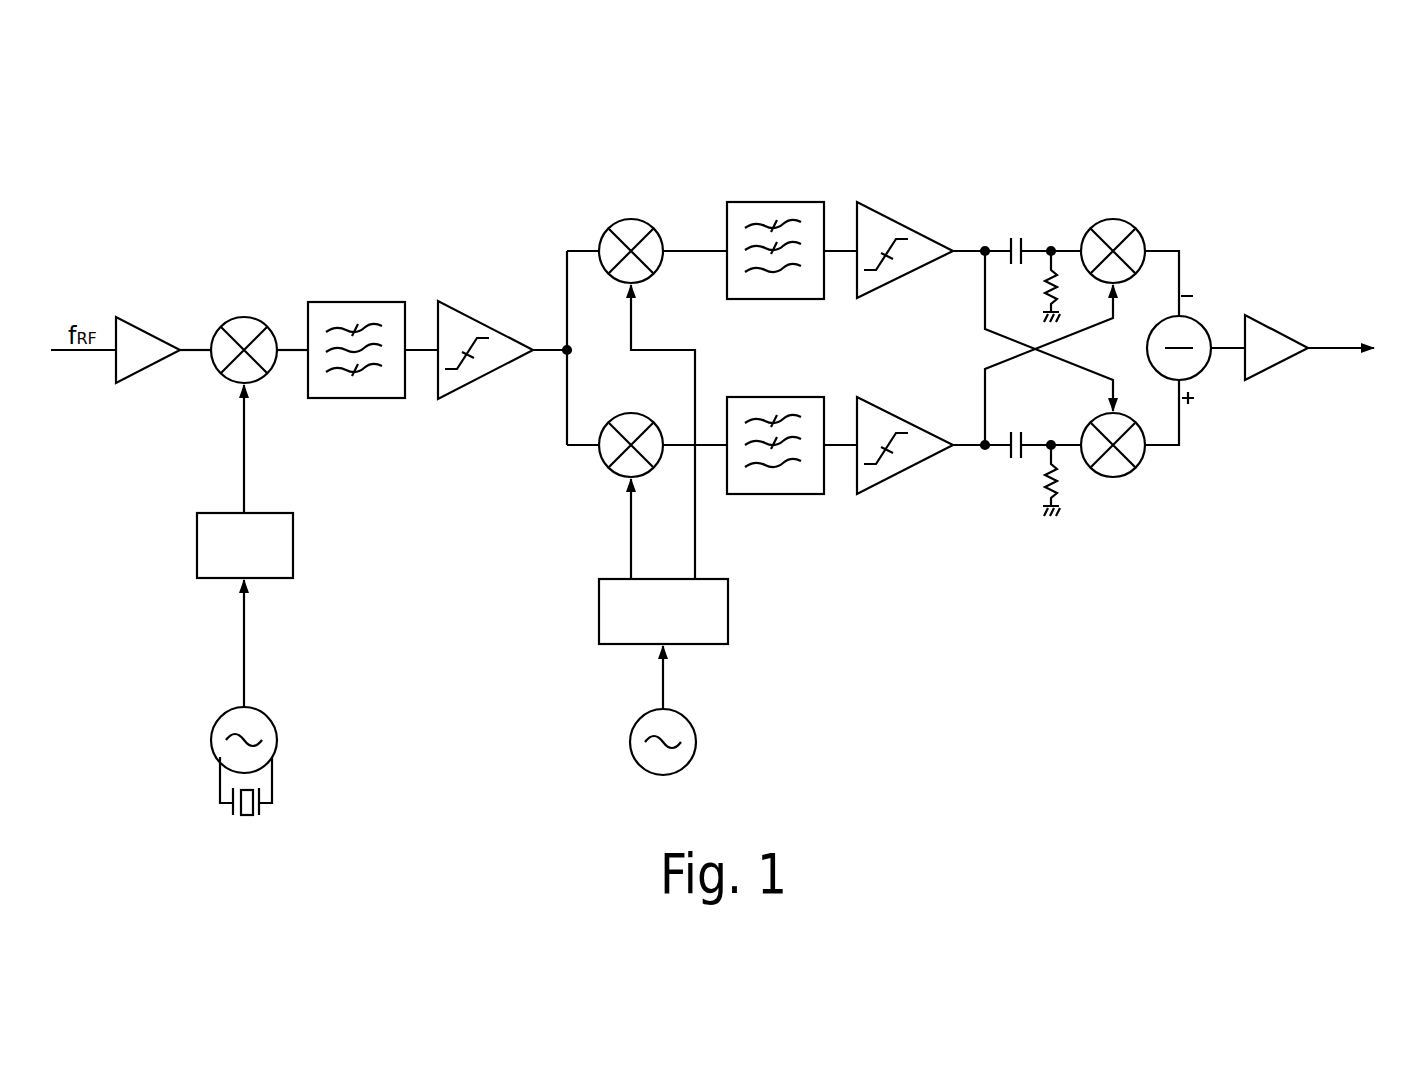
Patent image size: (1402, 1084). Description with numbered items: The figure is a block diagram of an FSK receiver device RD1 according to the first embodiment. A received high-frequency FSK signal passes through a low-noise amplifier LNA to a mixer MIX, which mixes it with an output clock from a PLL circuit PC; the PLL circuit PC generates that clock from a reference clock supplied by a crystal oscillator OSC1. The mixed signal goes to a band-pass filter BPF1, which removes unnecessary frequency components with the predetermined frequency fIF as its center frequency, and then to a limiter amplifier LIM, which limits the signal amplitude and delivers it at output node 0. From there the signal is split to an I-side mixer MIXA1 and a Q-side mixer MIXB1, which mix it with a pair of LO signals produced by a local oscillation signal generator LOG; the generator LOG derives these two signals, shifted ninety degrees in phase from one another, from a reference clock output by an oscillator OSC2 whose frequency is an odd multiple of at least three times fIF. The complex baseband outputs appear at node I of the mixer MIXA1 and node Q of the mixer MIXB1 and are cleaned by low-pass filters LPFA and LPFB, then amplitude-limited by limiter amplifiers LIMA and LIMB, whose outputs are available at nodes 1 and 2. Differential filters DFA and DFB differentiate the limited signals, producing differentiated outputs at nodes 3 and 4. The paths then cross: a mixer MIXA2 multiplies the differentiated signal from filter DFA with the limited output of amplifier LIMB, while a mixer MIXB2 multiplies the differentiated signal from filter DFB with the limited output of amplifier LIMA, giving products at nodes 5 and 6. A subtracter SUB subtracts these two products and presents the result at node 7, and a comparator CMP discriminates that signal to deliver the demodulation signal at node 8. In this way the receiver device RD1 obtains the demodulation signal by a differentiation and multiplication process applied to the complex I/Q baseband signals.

The FSK receiver device RD1 is at (345, 187).
The low-noise amplifier LNA is at (163, 338).
The mixer MIX is at (259, 337).
The band-pass filter BPF1 is at (373, 349).
The limiter amplifier LIM is at (502, 344).
The output node of the limiter amplifier LIM 0 is at (572, 348).
The mixer (I-side mixer) MIXA1 is at (662, 238).
The mixer (Q-side mixer) MIXB1 is at (662, 431).
The output node of the mixer MIXA1 I is at (679, 232).
The output node of the mixer MIXB1 Q is at (678, 428).
The low-pass filter LPFA is at (792, 234).
The low-pass filter LPFB is at (792, 429).
The limiter amplifier LIMA is at (934, 241).
The limiter amplifier LIMB is at (934, 436).
The output node of the limiter amplifier LIMA 1 is at (1037, 313).
The output node of the limiter amplifier LIMB 2 is at (1037, 367).
The differential filter DFA is at (1046, 264).
The differential filter DFB is at (1046, 458).
The output node of the differential filter DFA 3 is at (1058, 236).
The output node of the differential filter DFB 4 is at (1058, 430).
The mixer MIXA2 is at (1113, 238).
The mixer MIXB2 is at (1113, 461).
The output node of the mixer MIXA2 5 is at (1162, 266).
The output node of the mixer MIXB2 6 is at (1162, 412).
The subtracter SUB is at (1172, 350).
The output node of the subtracter SUB 7 is at (1228, 330).
The comparator CMP is at (1309, 334).
The output node of the comparator CMP 8 is at (1326, 330).
The local oscillation signal generator LOG is at (705, 464).
The crystal oscillator OSC1 is at (271, 697).
The oscillator OSC2 is at (717, 710).
The PLL circuit PC is at (245, 481).